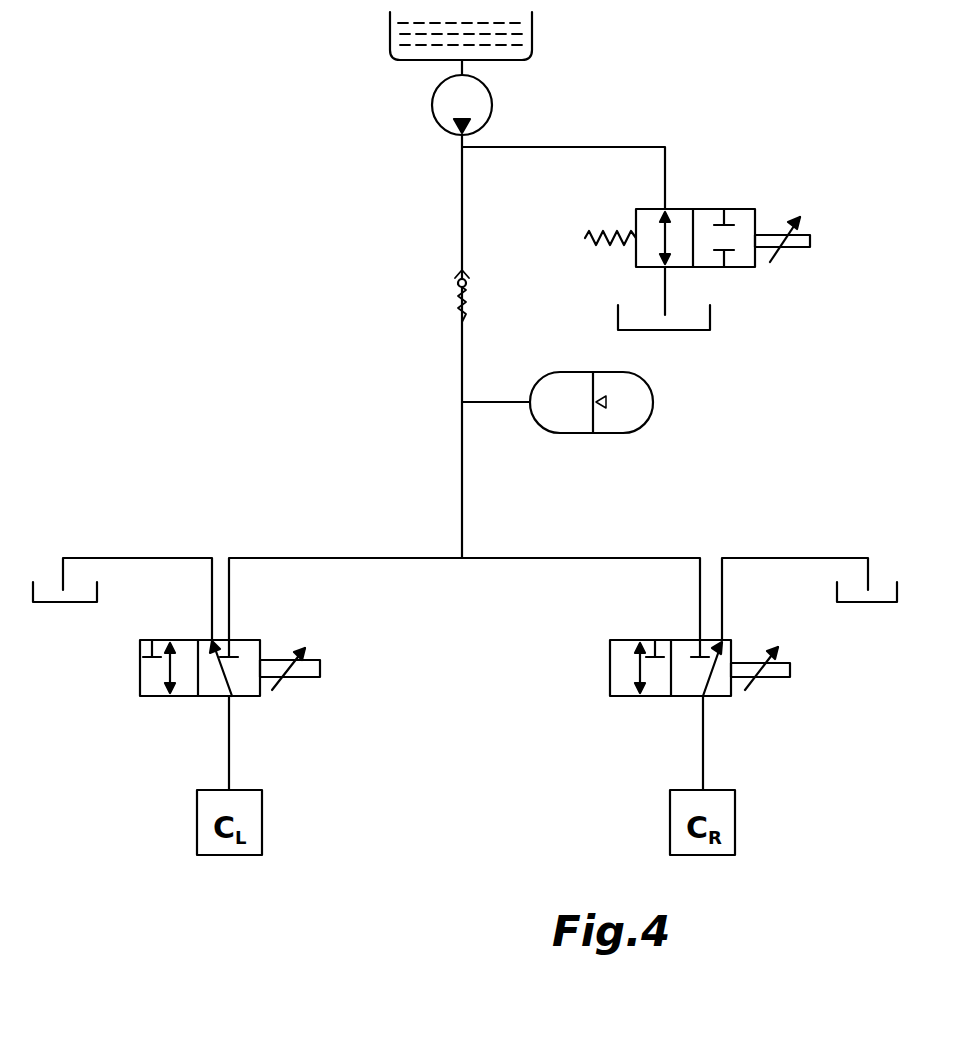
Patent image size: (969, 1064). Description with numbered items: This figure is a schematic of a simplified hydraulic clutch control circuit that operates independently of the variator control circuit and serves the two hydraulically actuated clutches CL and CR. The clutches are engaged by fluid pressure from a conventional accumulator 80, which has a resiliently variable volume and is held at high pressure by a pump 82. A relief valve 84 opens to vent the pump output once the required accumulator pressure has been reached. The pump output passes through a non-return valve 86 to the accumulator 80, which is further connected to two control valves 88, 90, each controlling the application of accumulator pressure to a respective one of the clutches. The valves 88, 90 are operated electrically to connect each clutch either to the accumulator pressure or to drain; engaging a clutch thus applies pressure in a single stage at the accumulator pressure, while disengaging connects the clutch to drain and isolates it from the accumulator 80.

The accumulator 80 is at (653, 402).
The pump 82 is at (413, 116).
The relief valve 84 is at (738, 200).
The non-return valve 86 is at (442, 302).
The control valve 88 is at (145, 705).
The control valve 90 is at (607, 710).